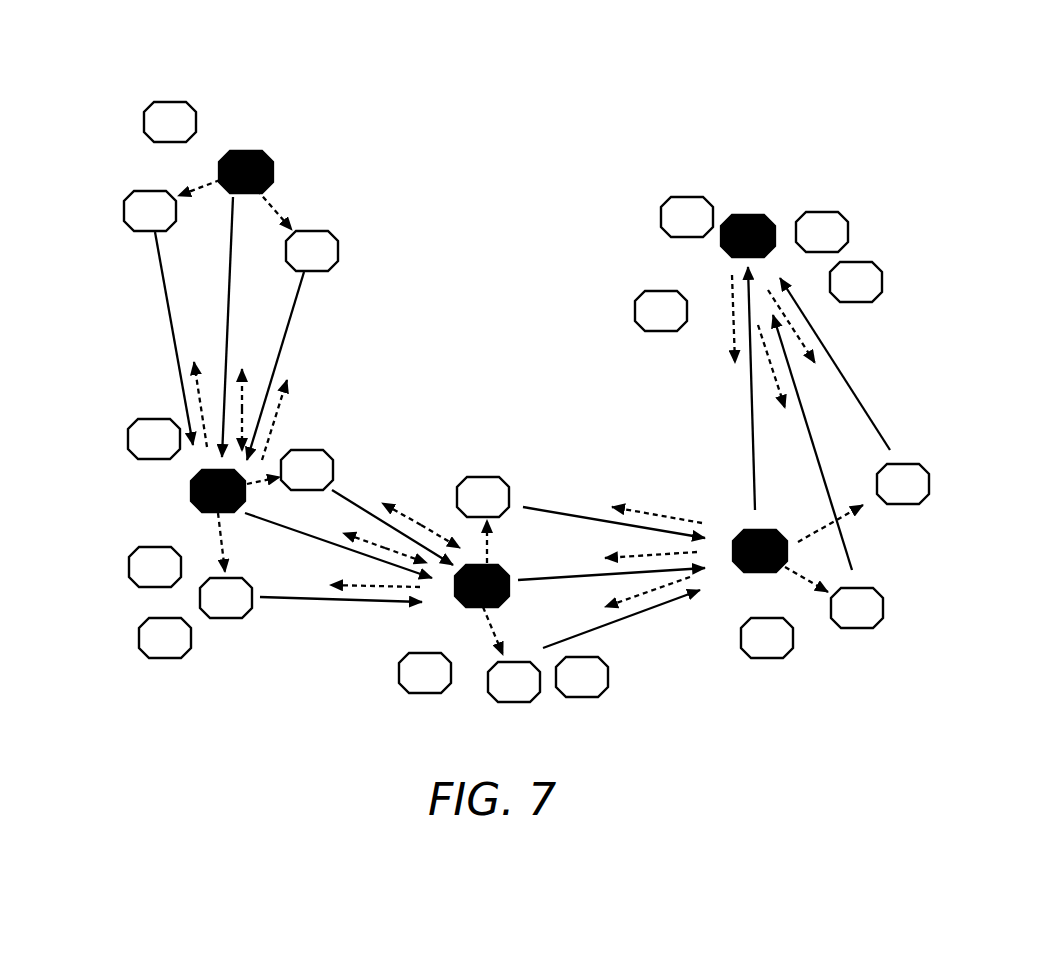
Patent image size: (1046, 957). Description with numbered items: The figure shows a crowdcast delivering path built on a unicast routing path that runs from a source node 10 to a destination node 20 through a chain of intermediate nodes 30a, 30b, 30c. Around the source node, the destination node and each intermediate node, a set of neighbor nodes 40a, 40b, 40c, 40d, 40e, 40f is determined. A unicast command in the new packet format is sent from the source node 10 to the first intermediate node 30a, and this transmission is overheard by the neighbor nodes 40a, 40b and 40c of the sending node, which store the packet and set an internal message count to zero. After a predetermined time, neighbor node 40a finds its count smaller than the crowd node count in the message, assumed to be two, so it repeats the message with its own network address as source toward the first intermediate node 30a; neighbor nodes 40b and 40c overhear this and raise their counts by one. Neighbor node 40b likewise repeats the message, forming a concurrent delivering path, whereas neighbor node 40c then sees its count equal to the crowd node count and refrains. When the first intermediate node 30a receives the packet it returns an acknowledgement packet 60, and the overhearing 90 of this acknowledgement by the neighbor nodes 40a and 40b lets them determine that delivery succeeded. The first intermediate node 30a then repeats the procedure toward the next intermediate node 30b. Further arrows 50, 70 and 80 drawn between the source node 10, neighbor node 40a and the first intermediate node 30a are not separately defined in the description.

The source node 10 is at (298, 133).
The destination node 20 is at (730, 175).
The first intermediate node 30a is at (148, 502).
The second intermediate node 30b is at (522, 521).
The third intermediate node 30c is at (721, 607).
The neighbor node 40a is at (387, 237).
The neighbor node 40b is at (118, 161).
The neighbor node 40c is at (171, 76).
The neighbor node 40d is at (212, 662).
The neighbor node 40e is at (387, 461).
The neighbor node 40f is at (127, 389).
The server to node link 50 is at (316, 327).
The acknowledgement packet 60 is at (313, 395).
The server to terminal message 70 is at (330, 188).
The terminal to node link 80 is at (335, 366).
The overhearing of acknowledgement packet 90 is at (343, 420).